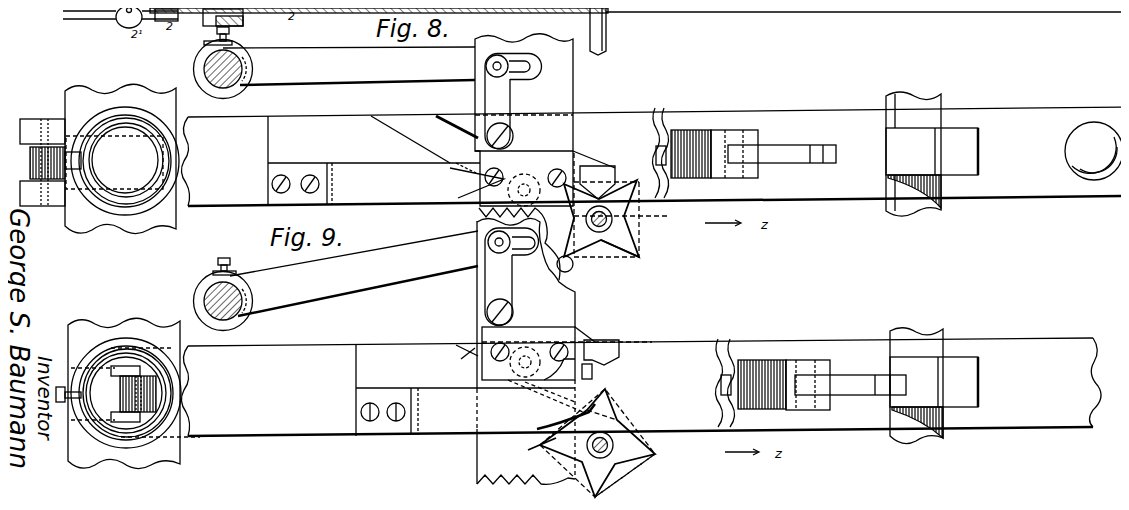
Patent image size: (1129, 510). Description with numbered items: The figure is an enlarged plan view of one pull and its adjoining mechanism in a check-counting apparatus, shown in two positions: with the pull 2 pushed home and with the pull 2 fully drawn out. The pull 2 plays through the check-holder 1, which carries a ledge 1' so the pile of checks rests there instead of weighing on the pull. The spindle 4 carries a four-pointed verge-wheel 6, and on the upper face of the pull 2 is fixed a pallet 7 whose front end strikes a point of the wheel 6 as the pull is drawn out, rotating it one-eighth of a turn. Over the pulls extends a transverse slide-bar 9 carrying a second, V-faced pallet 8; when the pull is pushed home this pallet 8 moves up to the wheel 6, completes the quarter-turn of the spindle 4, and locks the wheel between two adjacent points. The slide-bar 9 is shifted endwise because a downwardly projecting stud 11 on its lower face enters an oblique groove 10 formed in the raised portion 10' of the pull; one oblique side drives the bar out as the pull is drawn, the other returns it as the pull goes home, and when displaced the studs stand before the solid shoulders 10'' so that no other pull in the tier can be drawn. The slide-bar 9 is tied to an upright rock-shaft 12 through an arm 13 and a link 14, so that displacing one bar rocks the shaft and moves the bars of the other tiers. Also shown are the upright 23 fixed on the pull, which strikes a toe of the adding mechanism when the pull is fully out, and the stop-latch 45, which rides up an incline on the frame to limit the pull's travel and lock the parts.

In FIG. 8, the check-holder 1 is at (125, 161).
In FIG. 9, the check-holder 1 is at (126, 393).
In FIG. 8, the ledge 1' is at (126, 160).
In FIG. 9, the ledge 1' is at (126, 393).
In FIG. 8, the pull 2 is at (651, 156).
In FIG. 9, the pull 2 is at (641, 387).
In FIG. 8, the spindle 4 is at (604, 211).
In FIG. 9, the spindle 4 is at (605, 435).
In FIG. 8, the star-wheel or verge-wheel 6 is at (616, 205).
In FIG. 9, the star-wheel or verge-wheel 6 is at (598, 443).
In FIG. 8, the pallet 7 is at (388, 184).
In FIG. 9, the pallet 7 is at (478, 407).
In FIG. 8, the pallet 8 is at (607, 160).
In FIG. 9, the pallet 8 is at (602, 334).
In FIG. 8, the slide-bar 9 is at (524, 157).
In FIG. 9, the slide-bar 9 is at (526, 351).
In FIG. 8, the oblique groove 10 is at (456, 132).
In FIG. 9, the oblique groove 10 is at (467, 362).
In FIG. 8, the raised portion 10' is at (374, 160).
In FIG. 8, the solid shoulders 10'' is at (524, 132).
In FIG. 9, the solid shoulders 10'' is at (606, 373).
In FIG. 8, the stud 11 is at (527, 174).
In FIG. 9, the stud 11 is at (507, 345).
In FIG. 8, the rock-shaft 12 is at (203, 63).
In FIG. 9, the rock-shaft 12 is at (203, 288).
In FIG. 8, the arm 13 is at (326, 47).
In FIG. 9, the arm 13 is at (354, 273).
In FIG. 8, the link 14 is at (499, 87).
In FIG. 9, the link 14 is at (501, 276).
In FIG. 8, the upright 23 is at (703, 132).
In FIG. 9, the upright 23 is at (778, 362).
In FIG. 8, the stop-latch 45 is at (768, 143).
In FIG. 9, the stop-latch 45 is at (850, 385).